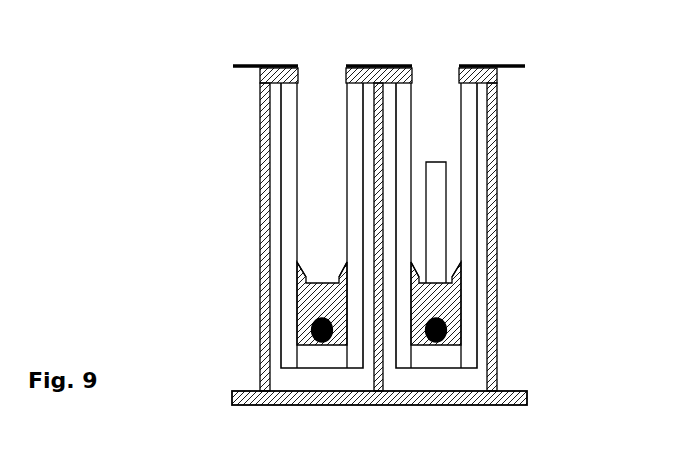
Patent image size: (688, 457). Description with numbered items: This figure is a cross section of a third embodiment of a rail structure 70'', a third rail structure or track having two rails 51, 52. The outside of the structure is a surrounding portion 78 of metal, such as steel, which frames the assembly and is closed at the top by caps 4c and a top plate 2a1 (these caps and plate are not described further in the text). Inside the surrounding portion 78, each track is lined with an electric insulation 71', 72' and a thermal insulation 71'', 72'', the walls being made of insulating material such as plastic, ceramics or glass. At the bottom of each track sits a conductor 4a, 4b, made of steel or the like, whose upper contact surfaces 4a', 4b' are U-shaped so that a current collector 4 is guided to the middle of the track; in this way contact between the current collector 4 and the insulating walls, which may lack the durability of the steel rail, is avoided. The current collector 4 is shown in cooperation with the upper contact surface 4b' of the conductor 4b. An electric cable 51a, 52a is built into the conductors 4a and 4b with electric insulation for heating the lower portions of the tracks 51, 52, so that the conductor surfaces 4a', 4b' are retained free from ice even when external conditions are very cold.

The surrounding portion 78 is at (265, 122).
The cap 4c is at (273, 65).
The top plate 2a1 is at (387, 51).
The rail structure 70'' is at (589, 60).
The electric insulation 71' is at (262, 225).
The thermal insulation 71'' is at (264, 225).
The electric insulation 72' is at (492, 225).
The thermal insulation 72'' is at (488, 225).
The rail 51 is at (335, 141).
The rail 52 is at (450, 137).
The current collector 4 is at (433, 170).
The conductor 4a is at (271, 303).
The contact surface 4a' is at (271, 263).
The electric cable 51a is at (312, 321).
The conductor 4b is at (491, 303).
The contact surface 4b' is at (491, 282).
The electric cable 52a is at (446, 330).